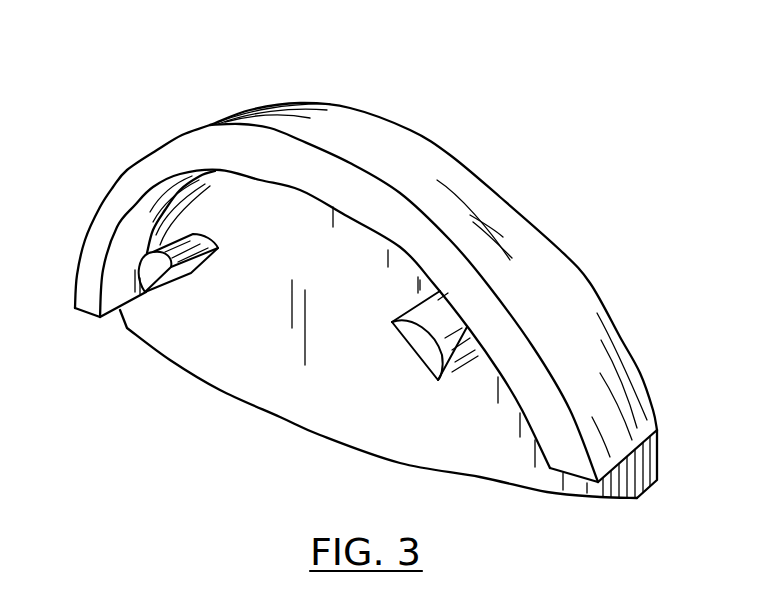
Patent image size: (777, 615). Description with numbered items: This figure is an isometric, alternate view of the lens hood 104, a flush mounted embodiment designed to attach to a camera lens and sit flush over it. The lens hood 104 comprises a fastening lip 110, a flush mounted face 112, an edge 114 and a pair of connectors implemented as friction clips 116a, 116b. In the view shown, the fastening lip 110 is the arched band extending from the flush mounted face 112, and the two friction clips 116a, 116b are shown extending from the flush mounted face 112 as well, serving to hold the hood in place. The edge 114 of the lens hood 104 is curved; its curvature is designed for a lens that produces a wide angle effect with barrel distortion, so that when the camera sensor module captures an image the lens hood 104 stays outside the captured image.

The lens hood 104 is at (231, 51).
The fastening lip 110 is at (88, 226).
The flush mounted face 112 is at (658, 457).
The edge 114 is at (280, 416).
The friction clip 116a is at (208, 265).
The friction clip 116b is at (408, 347).